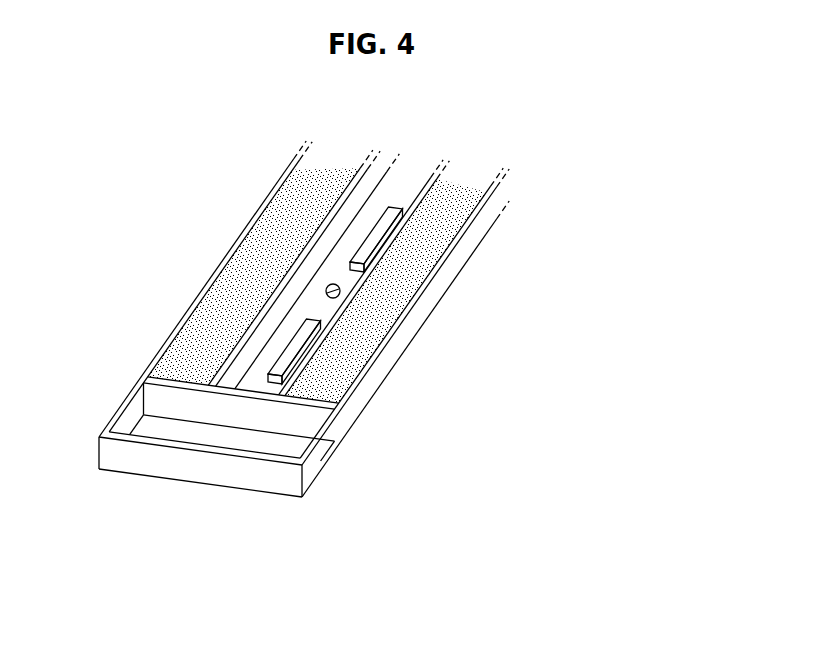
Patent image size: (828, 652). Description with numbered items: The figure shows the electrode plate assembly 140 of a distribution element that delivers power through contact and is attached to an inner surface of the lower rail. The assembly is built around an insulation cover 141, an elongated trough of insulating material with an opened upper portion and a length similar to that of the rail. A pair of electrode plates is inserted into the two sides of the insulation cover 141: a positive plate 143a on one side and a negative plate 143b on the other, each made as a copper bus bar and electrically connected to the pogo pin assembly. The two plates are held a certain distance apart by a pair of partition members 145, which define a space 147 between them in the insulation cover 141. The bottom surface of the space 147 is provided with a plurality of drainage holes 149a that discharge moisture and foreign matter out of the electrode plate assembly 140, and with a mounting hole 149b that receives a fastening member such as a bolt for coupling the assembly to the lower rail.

The electrode plate assembly 140 is at (520, 156).
The insulation cover 141 is at (330, 445).
The positive plate 143a is at (234, 277).
The negative plate 143b is at (408, 273).
The partition member 145 is at (412, 196).
The space 147 is at (373, 220).
The drainage hole 149a is at (287, 365).
The mounting hole 149b is at (340, 289).